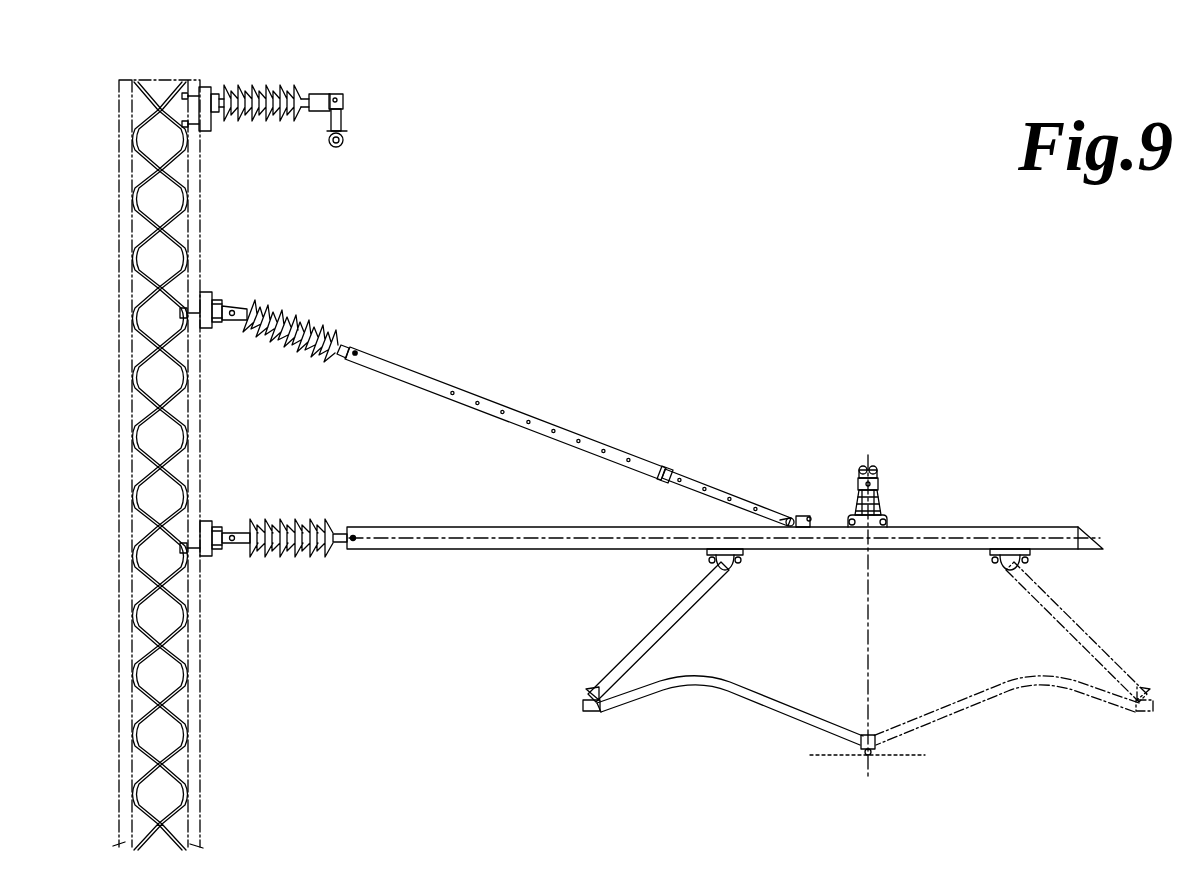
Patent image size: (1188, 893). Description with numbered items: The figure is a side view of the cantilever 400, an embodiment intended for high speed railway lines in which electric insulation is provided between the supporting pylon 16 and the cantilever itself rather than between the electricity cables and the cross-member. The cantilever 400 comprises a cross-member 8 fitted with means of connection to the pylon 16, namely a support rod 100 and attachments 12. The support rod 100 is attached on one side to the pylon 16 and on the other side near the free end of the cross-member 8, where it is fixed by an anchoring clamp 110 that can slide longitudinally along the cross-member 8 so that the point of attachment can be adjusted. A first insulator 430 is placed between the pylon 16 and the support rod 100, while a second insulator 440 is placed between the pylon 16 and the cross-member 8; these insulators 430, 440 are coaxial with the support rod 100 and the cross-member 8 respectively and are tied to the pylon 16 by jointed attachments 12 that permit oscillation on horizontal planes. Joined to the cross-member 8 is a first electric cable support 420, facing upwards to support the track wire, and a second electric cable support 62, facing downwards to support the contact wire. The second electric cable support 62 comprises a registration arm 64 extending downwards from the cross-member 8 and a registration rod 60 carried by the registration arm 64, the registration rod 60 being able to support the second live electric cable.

The cross-member 8 is at (468, 553).
The attachments 12 is at (215, 297).
The pylon 16 is at (203, 760).
The registration rod 60 is at (752, 690).
The second electric cable support 62 is at (813, 683).
The registration arm 64 is at (660, 608).
The support rod 100 is at (556, 428).
The anchoring clamp 110 is at (803, 517).
The cantilever 400 is at (544, 283).
The first electric cable support 420 is at (900, 500).
The first insulator 430 is at (328, 325).
The second insulator 440 is at (283, 560).